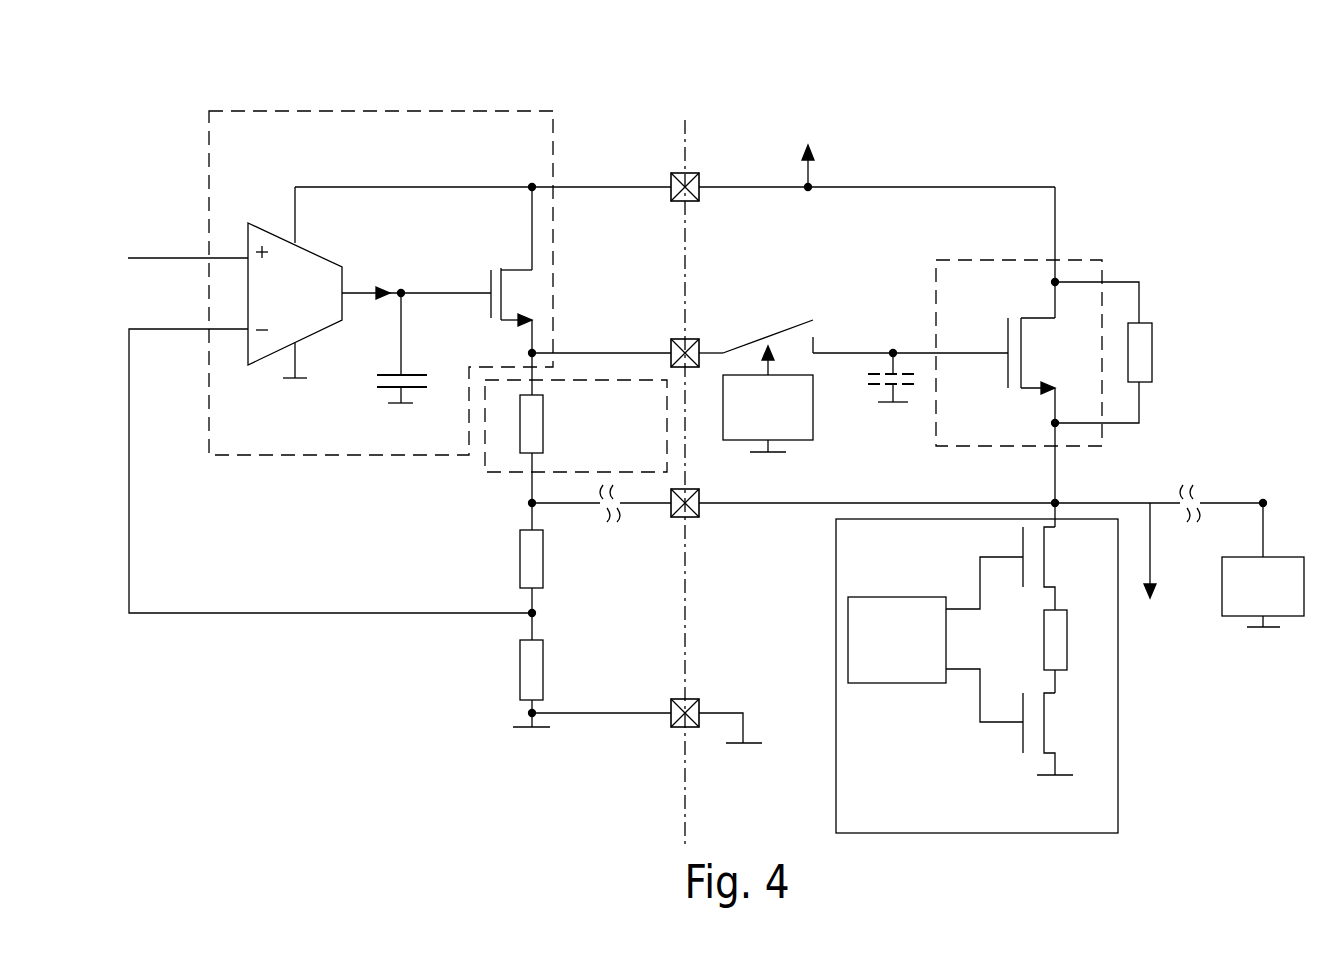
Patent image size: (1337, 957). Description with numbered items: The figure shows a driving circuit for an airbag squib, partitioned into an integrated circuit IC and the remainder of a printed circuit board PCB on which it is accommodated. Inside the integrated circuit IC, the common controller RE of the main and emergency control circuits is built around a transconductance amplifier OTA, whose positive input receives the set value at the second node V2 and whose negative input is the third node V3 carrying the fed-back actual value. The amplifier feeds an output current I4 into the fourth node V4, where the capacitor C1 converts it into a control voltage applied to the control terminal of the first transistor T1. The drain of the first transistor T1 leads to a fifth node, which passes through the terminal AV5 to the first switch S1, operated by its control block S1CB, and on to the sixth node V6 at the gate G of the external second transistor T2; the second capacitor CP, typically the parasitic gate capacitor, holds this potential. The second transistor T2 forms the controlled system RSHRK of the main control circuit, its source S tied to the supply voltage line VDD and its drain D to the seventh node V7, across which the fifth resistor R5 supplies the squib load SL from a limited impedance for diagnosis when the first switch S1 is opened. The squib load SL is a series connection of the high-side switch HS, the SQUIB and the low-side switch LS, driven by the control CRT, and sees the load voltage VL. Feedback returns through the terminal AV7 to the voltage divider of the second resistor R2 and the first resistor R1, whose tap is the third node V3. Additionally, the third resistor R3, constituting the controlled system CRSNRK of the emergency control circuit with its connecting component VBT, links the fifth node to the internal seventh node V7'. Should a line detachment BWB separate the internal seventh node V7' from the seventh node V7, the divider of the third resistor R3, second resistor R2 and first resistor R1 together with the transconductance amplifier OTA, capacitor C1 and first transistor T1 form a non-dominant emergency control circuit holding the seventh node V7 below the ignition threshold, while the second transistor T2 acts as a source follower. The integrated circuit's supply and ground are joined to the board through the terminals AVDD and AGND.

The integrated circuit IC is at (683, 75).
The printed circuit board PCB is at (1305, 75).
The common controller RE is at (381, 283).
The transconductance amplifier OTA is at (295, 282).
The second node V2 is at (188, 240).
The third node V3 is at (330, 453).
The output current I4 is at (371, 310).
The fourth node V4 is at (445, 279).
The capacitor C1 is at (422, 348).
The first transistor T1 is at (522, 290).
The connecting component VBT is at (576, 426).
The controlled system of the emergency control circuit CRSNRK is at (607, 447).
The third resistor R3 is at (515, 462).
The internal seventh node V7' is at (577, 508).
The potential critical line detachment BWB is at (613, 521).
The second resistor R2 is at (515, 585).
The first resistor R1 is at (515, 678).
The terminal of the supply voltage line AVDD is at (642, 199).
The terminal of the V5 line AV5 is at (615, 340).
The terminal of the V7 line AV7 is at (713, 516).
The terminal of the reference potential line AGND is at (647, 708).
The supply voltage line VDD is at (877, 159).
The first switch S1 is at (796, 328).
The control block for the first switch S1CB is at (768, 399).
The sixth node V6 is at (922, 337).
The second capacitor CP is at (893, 393).
The controlled system of the main control circuit RSHRK is at (1019, 353).
The second transistor T2 is at (1037, 345).
The gate G is at (990, 342).
The source S is at (1068, 306).
The drain D is at (1070, 398).
The fifth resistor R5 is at (1125, 352).
The seventh node V7 is at (983, 498).
The load voltage VL is at (1167, 550).
The squib load SL is at (1070, 668).
The high-side safety switch HS is at (1058, 556).
The squib SQUIB is at (1011, 651).
The low-side safety switch LS is at (1056, 734).
The control for HS and LS transistors CRT is at (935, 639).